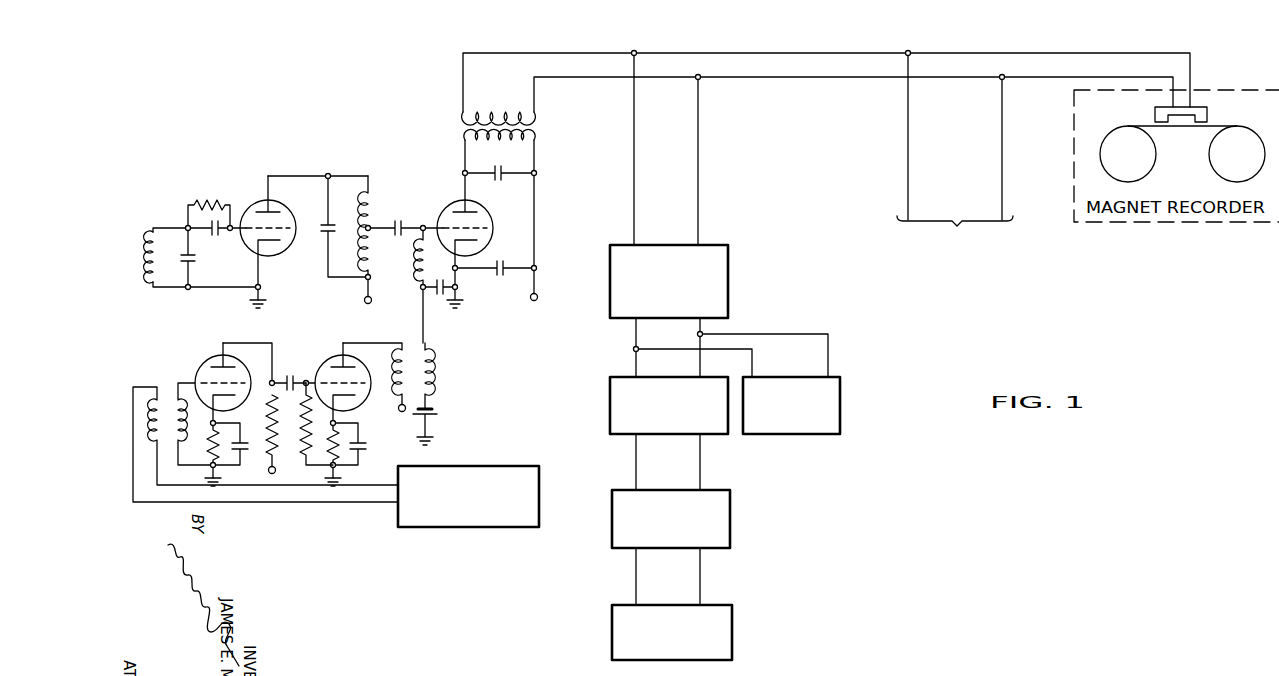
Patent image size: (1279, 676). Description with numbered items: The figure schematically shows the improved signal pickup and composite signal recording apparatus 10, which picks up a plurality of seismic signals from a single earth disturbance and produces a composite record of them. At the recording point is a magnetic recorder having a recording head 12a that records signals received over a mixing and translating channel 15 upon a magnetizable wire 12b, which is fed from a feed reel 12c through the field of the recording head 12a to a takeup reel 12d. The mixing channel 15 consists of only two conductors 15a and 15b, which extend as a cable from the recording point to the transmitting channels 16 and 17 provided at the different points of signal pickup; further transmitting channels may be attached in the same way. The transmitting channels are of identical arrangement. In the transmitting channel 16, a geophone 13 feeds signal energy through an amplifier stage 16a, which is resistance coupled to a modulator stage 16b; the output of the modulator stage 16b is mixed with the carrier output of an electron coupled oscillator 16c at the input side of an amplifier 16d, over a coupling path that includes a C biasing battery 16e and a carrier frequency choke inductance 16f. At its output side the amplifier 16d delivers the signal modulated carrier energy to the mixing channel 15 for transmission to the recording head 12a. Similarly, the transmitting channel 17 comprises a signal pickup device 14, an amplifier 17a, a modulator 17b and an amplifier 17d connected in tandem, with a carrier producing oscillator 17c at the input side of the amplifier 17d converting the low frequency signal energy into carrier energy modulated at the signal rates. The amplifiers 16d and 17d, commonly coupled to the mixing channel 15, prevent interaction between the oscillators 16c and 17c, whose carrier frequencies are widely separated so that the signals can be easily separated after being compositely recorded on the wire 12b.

The signal pickup and composite signal recording apparatus 10 is at (538, 358).
The recording head 12a is at (1208, 112).
The wire 12b is at (1163, 130).
The feed reel 12c is at (1116, 130).
The takeup reel 12d is at (1225, 173).
The geophone 13 is at (528, 513).
The signal pickup device 14 is at (722, 643).
The mixing and translating channel 15 is at (826, 155).
The conductor 15a is at (1124, 47).
The conductor 15b is at (1125, 73).
The transmitting channel 16 is at (550, 107).
The amplifier stage 16a is at (297, 341).
The modulator stage 16b is at (425, 341).
The oscillator 16c is at (381, 166).
The amplifier 16d is at (484, 219).
The C biasing battery 16e is at (438, 415).
The carrier frequency choke inductance 16f is at (416, 268).
The transmitting channel 17 is at (845, 230).
The amplifier 17a is at (722, 530).
The modulator 17b is at (610, 419).
The oscillator 17c is at (833, 420).
The amplifier 17d is at (722, 292).